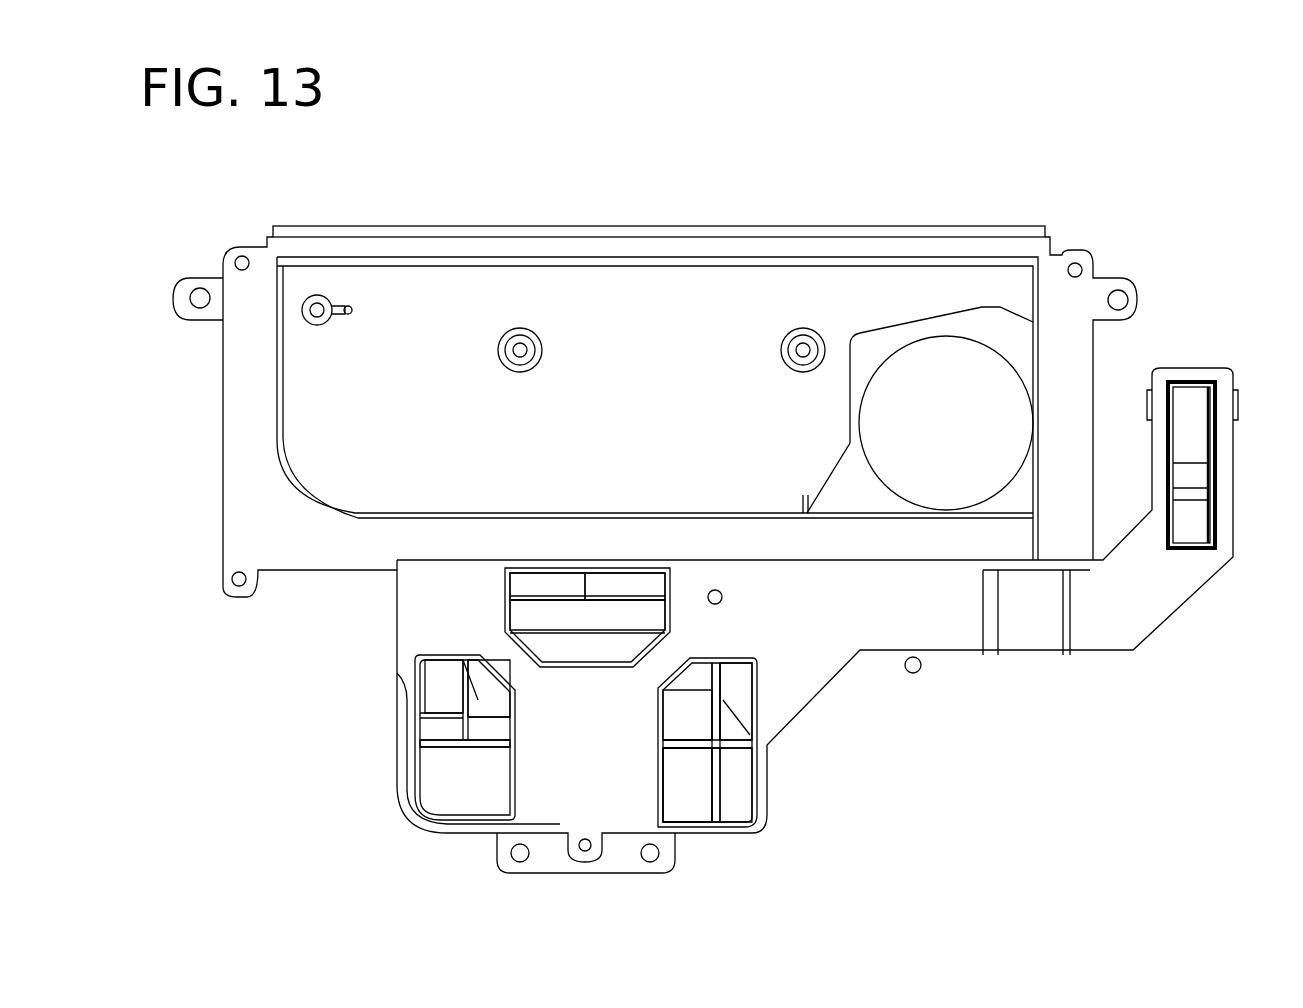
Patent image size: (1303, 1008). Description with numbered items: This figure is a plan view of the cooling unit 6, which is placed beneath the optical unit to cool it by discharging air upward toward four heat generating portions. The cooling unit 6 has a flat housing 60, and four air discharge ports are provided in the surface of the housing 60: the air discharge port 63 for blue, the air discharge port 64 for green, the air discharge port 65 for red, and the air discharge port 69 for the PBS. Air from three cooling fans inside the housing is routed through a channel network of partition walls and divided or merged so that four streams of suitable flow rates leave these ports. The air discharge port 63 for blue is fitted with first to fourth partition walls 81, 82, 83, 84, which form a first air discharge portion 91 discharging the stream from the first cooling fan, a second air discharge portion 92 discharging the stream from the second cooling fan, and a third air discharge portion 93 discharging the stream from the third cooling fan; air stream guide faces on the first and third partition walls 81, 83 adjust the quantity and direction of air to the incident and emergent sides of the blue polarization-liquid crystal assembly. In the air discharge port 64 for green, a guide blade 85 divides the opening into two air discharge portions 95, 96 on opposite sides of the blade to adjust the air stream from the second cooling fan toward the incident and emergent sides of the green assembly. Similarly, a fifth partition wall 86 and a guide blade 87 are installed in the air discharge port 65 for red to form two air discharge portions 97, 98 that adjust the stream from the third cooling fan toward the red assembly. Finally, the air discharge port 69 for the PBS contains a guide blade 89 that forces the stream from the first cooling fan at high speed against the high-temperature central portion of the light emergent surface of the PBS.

The cooling unit 6 is at (676, 226).
The housing 60 is at (808, 245).
The air discharge port for green 64 is at (652, 433).
The air discharge portion 95 is at (532, 590).
The air discharge portion 96 is at (585, 612).
The guide blade 85 is at (638, 593).
The air discharge port for red 65 is at (309, 678).
The air discharge portion 97 is at (442, 675).
The air discharge portion 98 is at (490, 697).
The fifth partition wall 86 is at (473, 680).
The guide blade 87 is at (483, 747).
The air discharge port for blue 63 is at (887, 680).
The first partition wall 81 is at (712, 667).
The second partition wall 82 is at (683, 740).
The third partition wall 83 is at (690, 782).
The fourth partition wall 84 is at (707, 757).
The first air discharge portion 91 is at (740, 702).
The second air discharge portion 92 is at (687, 700).
The third air discharge portion 93 is at (685, 790).
The air discharge port for PBS 69 is at (1205, 428).
The guide blade 89 is at (1193, 472).